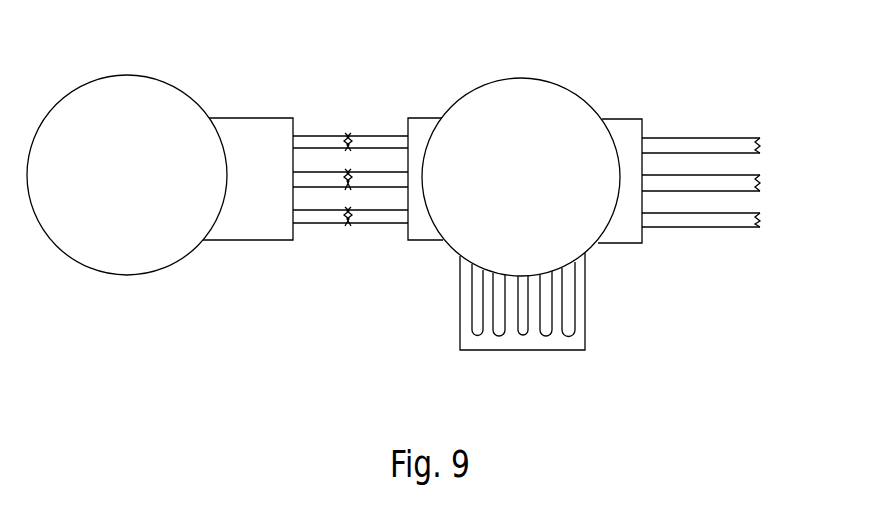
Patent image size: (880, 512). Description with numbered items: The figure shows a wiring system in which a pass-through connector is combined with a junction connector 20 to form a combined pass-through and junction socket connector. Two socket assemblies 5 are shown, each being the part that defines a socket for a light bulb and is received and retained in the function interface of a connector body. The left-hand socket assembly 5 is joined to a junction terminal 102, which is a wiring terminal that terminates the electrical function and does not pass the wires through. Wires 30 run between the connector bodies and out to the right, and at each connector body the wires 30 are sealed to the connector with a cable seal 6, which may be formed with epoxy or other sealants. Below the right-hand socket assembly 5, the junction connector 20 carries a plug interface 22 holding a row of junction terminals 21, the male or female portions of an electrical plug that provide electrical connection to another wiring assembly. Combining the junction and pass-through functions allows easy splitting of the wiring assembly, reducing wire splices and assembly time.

The socket assembly 5 is at (143, 274).
The cable seal 6 is at (278, 117).
The junction socket connector 20 is at (642, 76).
The junction terminals 21 is at (585, 293).
The plug interface 22 is at (552, 350).
The wires 30 is at (370, 225).
The junction terminal 102 is at (233, 240).